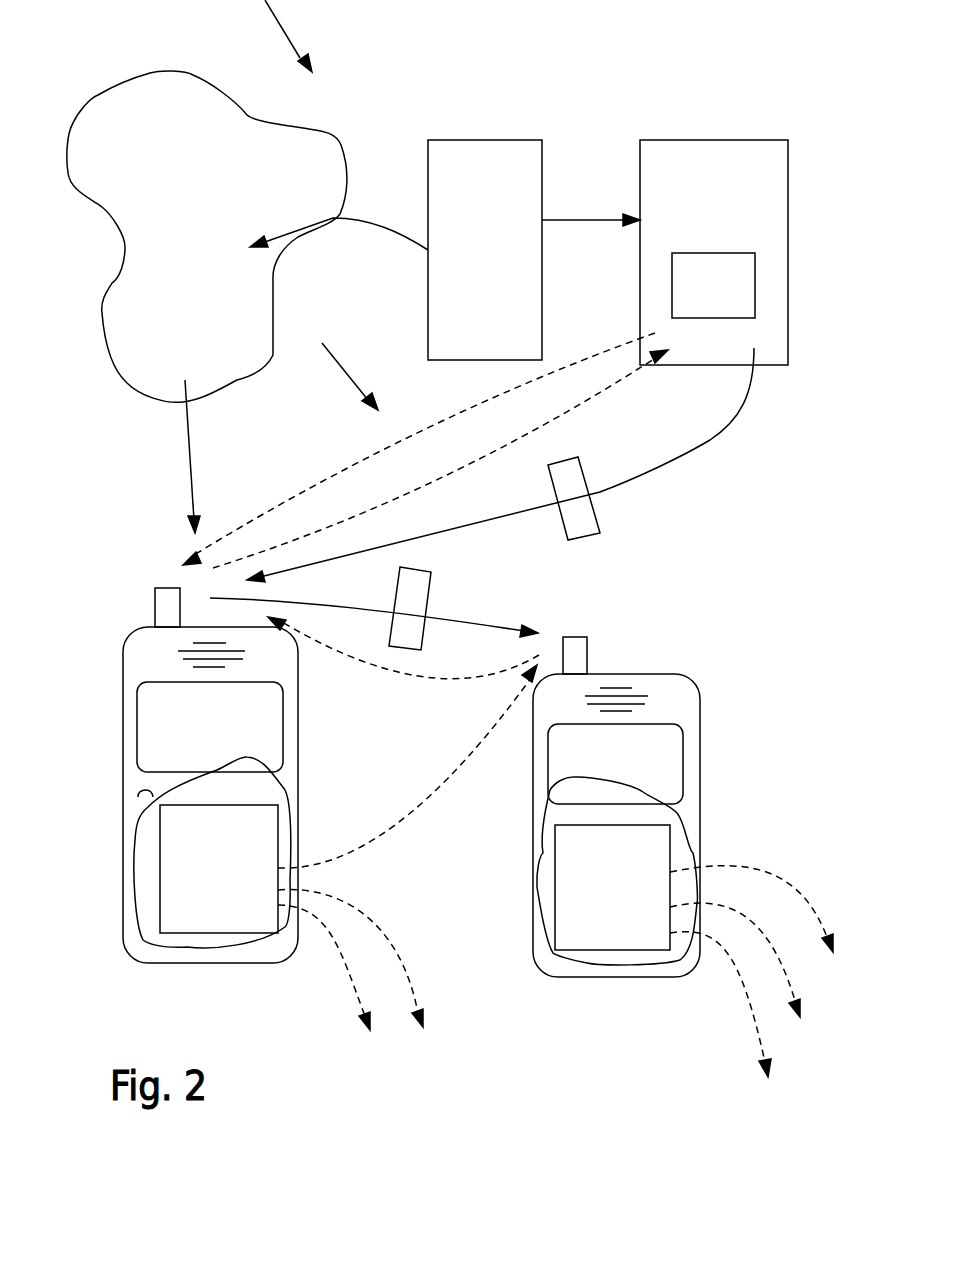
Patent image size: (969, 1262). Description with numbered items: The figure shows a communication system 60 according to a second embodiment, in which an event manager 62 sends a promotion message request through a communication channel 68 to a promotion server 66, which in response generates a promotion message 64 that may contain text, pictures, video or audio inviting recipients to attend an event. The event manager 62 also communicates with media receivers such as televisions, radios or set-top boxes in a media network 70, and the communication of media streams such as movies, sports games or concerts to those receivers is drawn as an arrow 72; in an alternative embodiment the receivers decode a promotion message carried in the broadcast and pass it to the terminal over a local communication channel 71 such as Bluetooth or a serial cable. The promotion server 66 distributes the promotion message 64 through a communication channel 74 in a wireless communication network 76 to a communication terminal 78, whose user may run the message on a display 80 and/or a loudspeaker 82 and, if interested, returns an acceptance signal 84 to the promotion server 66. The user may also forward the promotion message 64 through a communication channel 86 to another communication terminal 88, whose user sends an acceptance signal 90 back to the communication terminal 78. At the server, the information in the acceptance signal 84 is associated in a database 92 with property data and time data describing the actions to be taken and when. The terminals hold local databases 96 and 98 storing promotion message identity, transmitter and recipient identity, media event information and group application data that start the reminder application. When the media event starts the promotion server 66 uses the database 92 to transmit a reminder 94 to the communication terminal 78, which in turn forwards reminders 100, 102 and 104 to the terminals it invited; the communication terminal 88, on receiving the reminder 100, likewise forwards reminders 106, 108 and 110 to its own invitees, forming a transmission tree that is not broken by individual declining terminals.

The communication system 60 is at (262, 0).
The event manager 62 is at (460, 140).
The promotion message 64 is at (573, 507).
The promotion server 66 is at (738, 140).
The communication channel 68 is at (598, 220).
The media network 70 is at (115, 345).
The local communication channel 71 is at (185, 452).
The arrow 72 is at (420, 232).
The communication channel 74 is at (740, 420).
The wireless communication network 76 is at (322, 343).
The communication terminal 78 is at (128, 725).
The display 80 is at (262, 710).
The loudspeaker 82 is at (218, 660).
The acceptance signal 84 is at (617, 375).
The communication channel 86 is at (445, 615).
The communication terminal 88 is at (690, 700).
The acceptance signal 90 is at (460, 684).
The database 92 is at (690, 300).
The reminder 94 is at (297, 492).
The local database 96 is at (278, 823).
The local database 98 is at (672, 839).
The reminder 100 is at (452, 775).
The reminder 102 is at (412, 982).
The reminder 104 is at (345, 968).
The reminder 106 is at (803, 888).
The reminder 108 is at (787, 970).
The reminder 110 is at (752, 985).